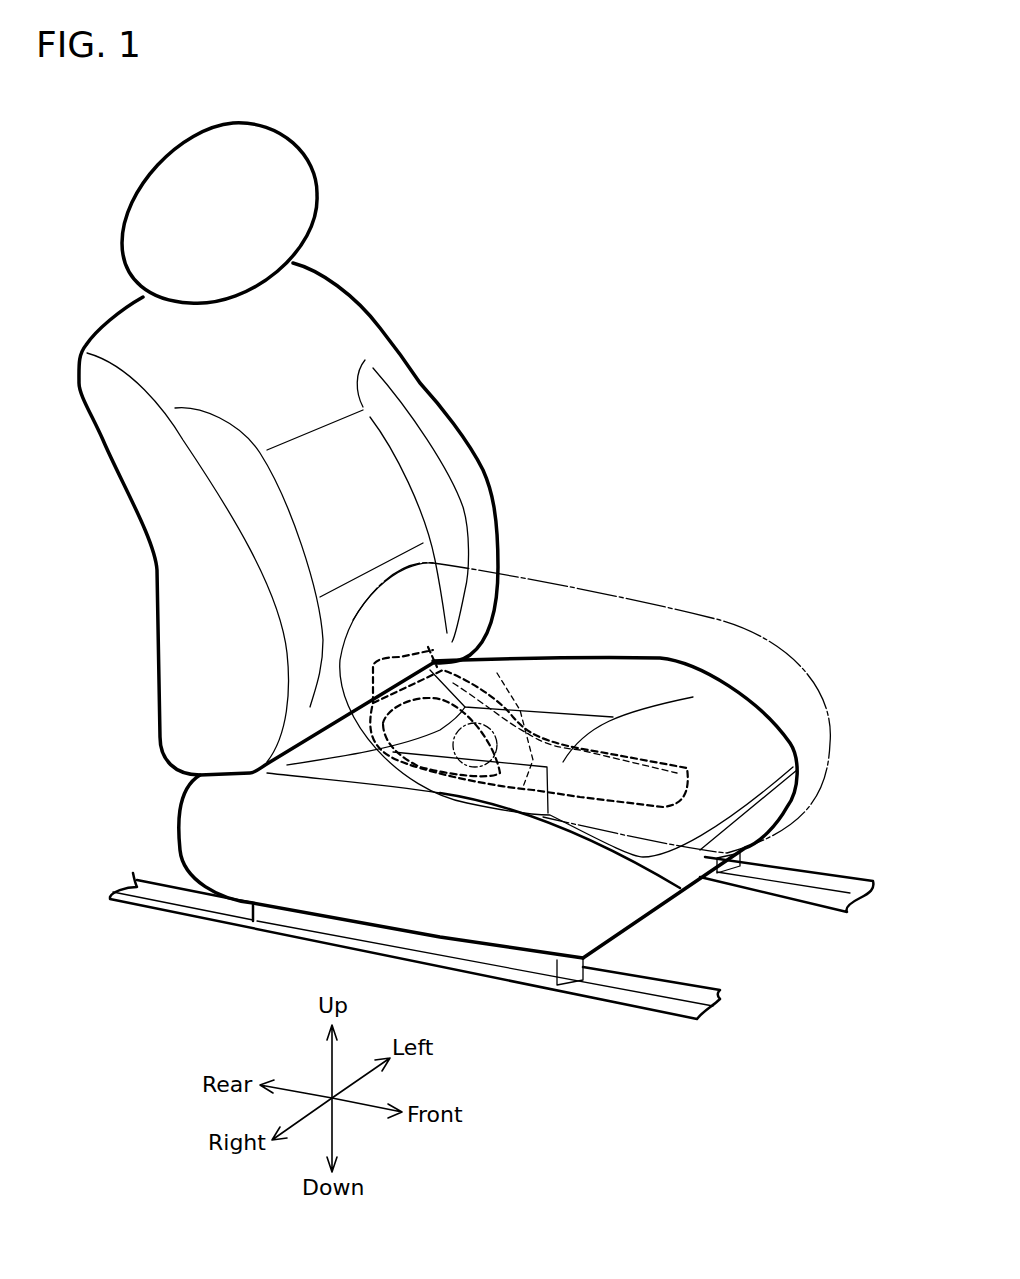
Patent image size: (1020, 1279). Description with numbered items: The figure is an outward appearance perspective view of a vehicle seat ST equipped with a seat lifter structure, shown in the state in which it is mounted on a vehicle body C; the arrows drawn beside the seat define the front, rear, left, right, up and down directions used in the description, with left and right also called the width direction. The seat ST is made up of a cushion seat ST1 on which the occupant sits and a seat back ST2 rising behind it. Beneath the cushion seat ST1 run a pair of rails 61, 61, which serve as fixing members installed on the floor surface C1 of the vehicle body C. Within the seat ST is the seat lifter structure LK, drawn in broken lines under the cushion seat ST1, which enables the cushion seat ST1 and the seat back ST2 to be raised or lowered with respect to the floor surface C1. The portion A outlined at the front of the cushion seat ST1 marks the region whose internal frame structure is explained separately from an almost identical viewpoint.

The seat ST is at (494, 259).
The cushion seat ST1 is at (650, 680).
The seat back ST2 is at (373, 463).
The seat lifter structure LK is at (540, 730).
The portion A is at (720, 620).
The rail 61 is at (660, 987).
The floor surface C1 is at (840, 981).
The vehicle body C is at (767, 943).